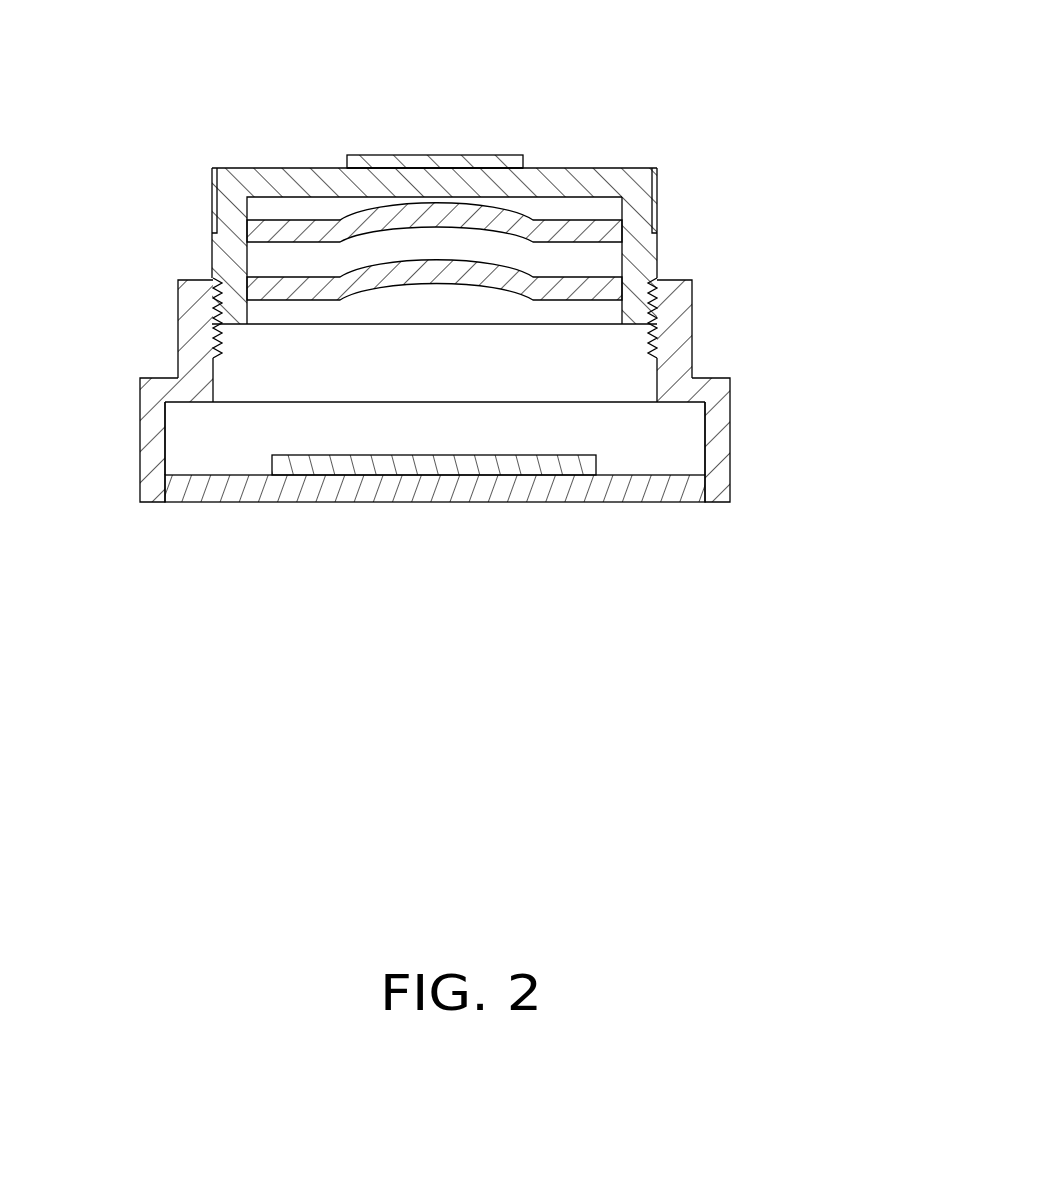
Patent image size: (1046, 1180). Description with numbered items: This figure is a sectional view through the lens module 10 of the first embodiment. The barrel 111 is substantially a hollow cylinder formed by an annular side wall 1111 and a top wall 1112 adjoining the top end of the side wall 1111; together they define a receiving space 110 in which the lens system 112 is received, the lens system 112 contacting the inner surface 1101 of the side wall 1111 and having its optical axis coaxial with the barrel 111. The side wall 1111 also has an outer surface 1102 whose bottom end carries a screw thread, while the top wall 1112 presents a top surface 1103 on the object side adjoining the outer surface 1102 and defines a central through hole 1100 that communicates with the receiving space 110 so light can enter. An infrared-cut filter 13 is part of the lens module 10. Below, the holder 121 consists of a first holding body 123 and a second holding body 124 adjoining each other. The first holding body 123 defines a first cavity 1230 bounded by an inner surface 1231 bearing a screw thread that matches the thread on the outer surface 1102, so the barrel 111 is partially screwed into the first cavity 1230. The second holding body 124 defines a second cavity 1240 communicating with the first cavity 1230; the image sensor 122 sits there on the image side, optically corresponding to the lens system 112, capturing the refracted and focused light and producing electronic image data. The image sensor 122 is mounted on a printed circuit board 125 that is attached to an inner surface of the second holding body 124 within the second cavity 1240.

The lens module 10 is at (643, 90).
The receiving space 110 is at (562, 208).
The through hole 1100 is at (367, 165).
The inner surface 1101 is at (245, 203).
The outer surface 1102 is at (212, 253).
The top surface 1103 is at (258, 166).
The barrel 111 is at (507, 235).
The side wall 1111 is at (640, 228).
The top wall 1112 is at (618, 168).
The lens system 112 is at (485, 217).
The infrared-cut filter 13 is at (424, 160).
The holder 121 is at (805, 330).
The image sensor 122 is at (584, 466).
The first holding body 123 is at (680, 345).
The first cavity 1230 is at (242, 373).
The inner surface 1231 is at (212, 342).
The second holding body 124 is at (718, 407).
The second cavity 1240 is at (192, 445).
The printed circuit board 125 is at (642, 487).